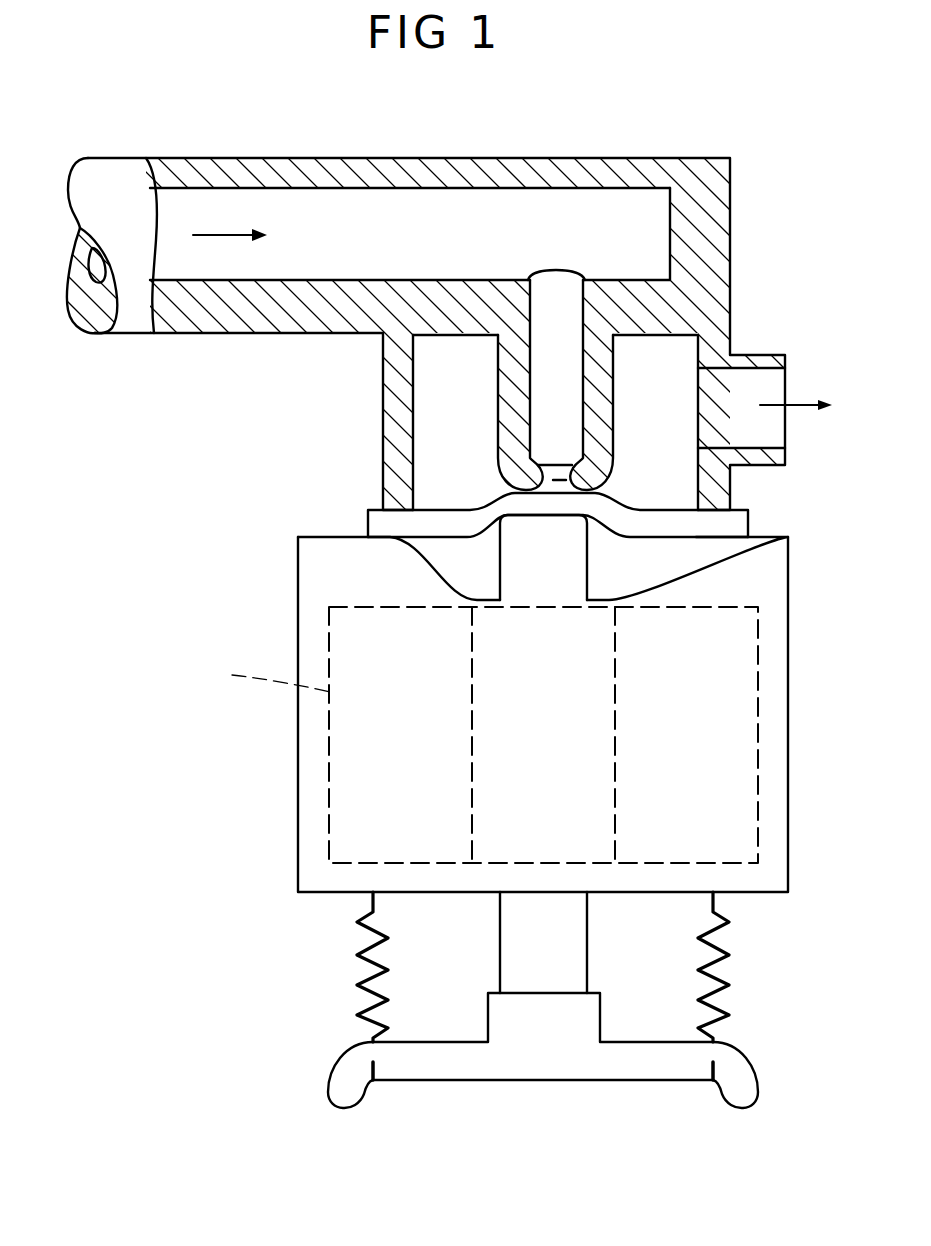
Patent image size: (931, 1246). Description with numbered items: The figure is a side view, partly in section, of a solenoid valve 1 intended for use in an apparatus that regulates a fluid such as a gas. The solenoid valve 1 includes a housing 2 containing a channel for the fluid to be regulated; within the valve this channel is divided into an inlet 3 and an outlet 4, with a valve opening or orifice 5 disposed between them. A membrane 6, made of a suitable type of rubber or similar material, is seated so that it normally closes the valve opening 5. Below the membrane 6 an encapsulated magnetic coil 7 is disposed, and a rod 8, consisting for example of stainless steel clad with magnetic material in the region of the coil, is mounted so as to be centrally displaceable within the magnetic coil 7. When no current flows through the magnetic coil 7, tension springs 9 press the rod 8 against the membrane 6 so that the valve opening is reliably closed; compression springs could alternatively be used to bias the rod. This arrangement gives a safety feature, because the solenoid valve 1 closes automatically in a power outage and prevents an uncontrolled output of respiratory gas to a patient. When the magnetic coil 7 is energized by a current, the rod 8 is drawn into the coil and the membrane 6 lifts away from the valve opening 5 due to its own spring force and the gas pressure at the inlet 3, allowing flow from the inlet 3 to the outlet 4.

The solenoid valve 1 is at (750, 184).
The housing 2 is at (497, 178).
The inlet 3 is at (218, 207).
The outlet 4 is at (765, 383).
The valve opening 5 is at (548, 452).
The membrane 6 is at (735, 525).
The magnetic coil 7 is at (727, 772).
The rod 8 is at (563, 945).
The tension springs 9 is at (365, 976).